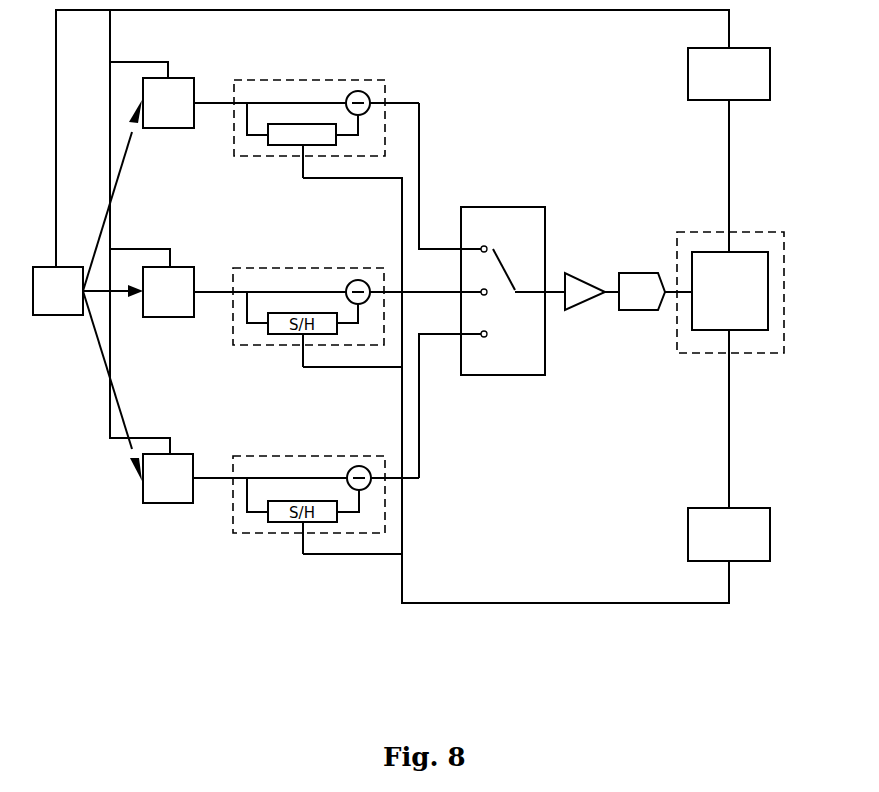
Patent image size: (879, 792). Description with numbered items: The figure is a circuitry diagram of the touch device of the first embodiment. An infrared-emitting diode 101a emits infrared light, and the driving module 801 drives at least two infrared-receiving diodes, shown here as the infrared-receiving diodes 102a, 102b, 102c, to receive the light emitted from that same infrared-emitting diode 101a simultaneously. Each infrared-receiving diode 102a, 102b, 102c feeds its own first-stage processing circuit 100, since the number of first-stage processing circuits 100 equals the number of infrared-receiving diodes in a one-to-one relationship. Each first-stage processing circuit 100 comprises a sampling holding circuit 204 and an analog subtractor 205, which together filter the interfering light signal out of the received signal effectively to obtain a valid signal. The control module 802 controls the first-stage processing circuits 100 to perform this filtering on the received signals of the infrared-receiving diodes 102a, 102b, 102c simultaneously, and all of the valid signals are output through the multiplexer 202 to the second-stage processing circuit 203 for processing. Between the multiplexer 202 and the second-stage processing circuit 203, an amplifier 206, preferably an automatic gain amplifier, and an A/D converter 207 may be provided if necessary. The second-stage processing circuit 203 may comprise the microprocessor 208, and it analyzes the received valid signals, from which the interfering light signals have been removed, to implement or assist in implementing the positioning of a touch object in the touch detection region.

The infrared-emitting diode 101a is at (57, 315).
The infrared-receiving diode 102a is at (193, 78).
The infrared-receiving diode 102b is at (194, 267).
The infrared-receiving diode 102c is at (193, 454).
The first-stage processing circuit 100 is at (302, 80).
The sampling holding circuit 204 is at (263, 147).
The analog subtractor 205 is at (360, 92).
The multiplexer 202 is at (545, 207).
The amplifier 206 is at (565, 272).
The A/D converter 207 is at (620, 273).
The second-stage processing circuit 203 is at (677, 232).
The microprocessor 208 is at (768, 252).
The driving module 801 is at (688, 100).
The control module 802 is at (688, 508).